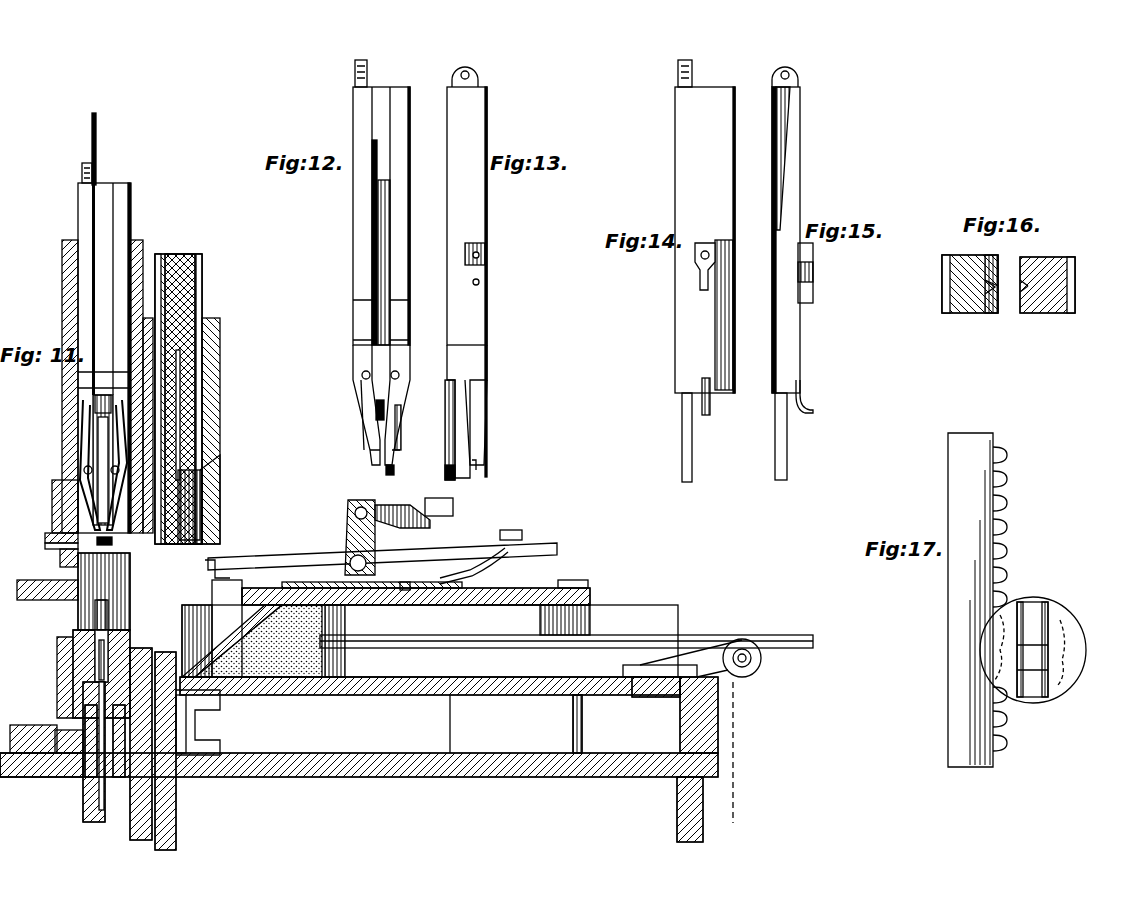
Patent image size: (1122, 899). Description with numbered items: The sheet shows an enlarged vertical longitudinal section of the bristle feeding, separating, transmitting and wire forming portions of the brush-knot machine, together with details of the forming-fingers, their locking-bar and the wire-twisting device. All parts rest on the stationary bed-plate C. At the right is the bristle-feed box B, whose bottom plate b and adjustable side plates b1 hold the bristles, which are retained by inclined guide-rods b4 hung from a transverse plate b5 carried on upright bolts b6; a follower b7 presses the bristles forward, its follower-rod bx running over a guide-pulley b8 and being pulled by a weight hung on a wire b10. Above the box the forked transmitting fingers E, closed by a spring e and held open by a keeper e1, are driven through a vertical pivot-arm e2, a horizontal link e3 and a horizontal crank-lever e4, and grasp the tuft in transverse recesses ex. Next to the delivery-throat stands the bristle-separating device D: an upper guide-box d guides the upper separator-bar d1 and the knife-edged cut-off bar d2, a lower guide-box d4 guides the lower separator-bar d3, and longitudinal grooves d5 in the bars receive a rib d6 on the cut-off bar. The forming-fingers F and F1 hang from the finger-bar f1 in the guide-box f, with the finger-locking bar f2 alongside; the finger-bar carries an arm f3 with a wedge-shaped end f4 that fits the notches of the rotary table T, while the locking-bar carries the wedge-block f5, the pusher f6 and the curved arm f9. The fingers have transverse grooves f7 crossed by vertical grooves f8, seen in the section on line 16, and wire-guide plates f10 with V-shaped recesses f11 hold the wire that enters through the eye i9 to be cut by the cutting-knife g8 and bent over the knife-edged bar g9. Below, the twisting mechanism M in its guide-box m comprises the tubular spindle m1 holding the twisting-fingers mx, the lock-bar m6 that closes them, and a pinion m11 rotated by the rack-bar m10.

In FIG. 11, the guide-box f is at (62, 272).
In FIG. 11, the finger-bar f1 is at (85, 217).
In FIG. 12, the finger-bar f1 is at (353, 230).
In FIG. 13, the finger-bar f1 is at (475, 225).
In FIG. 14, the finger-locking bar f2 is at (680, 198).
In FIG. 15, the finger-locking bar f2 is at (790, 178).
In FIG. 12, the downwardly-extending arm f3 is at (400, 428).
In FIG. 11, the wedge-shaped end f4 is at (112, 545).
In FIG. 12, the wedge-shaped end f4 is at (394, 470).
In FIG. 13, the wedge-shaped end f4 is at (455, 472).
In FIG. 11, the wedge-shaped block f5 is at (95, 398).
In FIG. 14, the wedge-shaped block f5 is at (695, 285).
In FIG. 15, the wedge-shaped block f5 is at (813, 288).
In FIG. 14, the stem or pusher f6 is at (682, 445).
In FIG. 15, the stem or pusher f6 is at (790, 455).
In FIG. 16, the transverse grooves f7 is at (990, 255).
In FIG. 16, the vertical grooves f8 is at (985, 287).
In FIG. 14, the curved arm f9 is at (710, 410).
In FIG. 15, the curved arm f9 is at (814, 405).
In FIG. 11, the wire-guide plate f10 is at (78, 374).
In FIG. 12, the wire-guide plate f10 is at (355, 360).
In FIG. 13, the wire-guide plate f10 is at (480, 355).
In FIG. 16, the wire-guide plate f10 is at (944, 298).
In FIG. 13, the V-shaped recesses f11 is at (482, 455).
In FIG. 11, the forming-finger F is at (110, 505).
In FIG. 12, the forming-finger F is at (398, 406).
In FIG. 16, the forming-finger F is at (1055, 305).
In FIG. 11, the forming-finger F1 is at (90, 488).
In FIG. 12, the forming-finger F1 is at (360, 415).
In FIG. 13, the forming-finger F1 is at (487, 425).
In FIG. 16, the forming-finger F1 is at (968, 300).
In FIG. 12, the section line 16 is at (370, 448).
In FIG. 11, the upper guide-box d is at (220, 403).
In FIG. 11, the upper separator-bar d1 is at (175, 254).
In FIG. 11, the bristle-cut-off bar d2 is at (188, 300).
In FIG. 11, the lower separator-bar d3 is at (166, 650).
In FIG. 11, the lower guide-box d4 is at (160, 632).
In FIG. 11, the longitudinal grooves d5 is at (180, 372).
In FIG. 11, the longitudinal rib d6 is at (190, 500).
In FIG. 11, the bristle-separating device D is at (168, 520).
In FIG. 11, the eye i9 is at (45, 546).
In FIG. 11, the cutting-knife g8 is at (62, 560).
In FIG. 11, the knife-edged bar g9 is at (104, 617).
In FIG. 11, the rotary table T is at (50, 600).
In FIG. 11, the wire grasping and twisting mechanism M is at (57, 663).
In FIG. 11, the guide-box m is at (55, 690).
In FIG. 11, the twisting-fingers mx is at (96, 614).
In FIG. 17, the twisting-fingers mx is at (1030, 615).
In FIG. 11, the tubular spindle m1 is at (83, 812).
In FIG. 17, the tubular spindle m1 is at (1075, 685).
In FIG. 11, the lock-bar m6 is at (100, 835).
In FIG. 11, the rack-bar m10 is at (40, 775).
In FIG. 17, the rack-bar m10 is at (958, 497).
In FIG. 11, the pinion m11 is at (85, 725).
In FIG. 17, the pinion m11 is at (1052, 610).
In FIG. 11, the bristle-feed box B is at (360, 665).
In FIG. 11, the bed-plate C is at (359, 784).
In FIG. 11, the bottom plate b is at (440, 697).
In FIG. 11, the side plates b1 is at (228, 590).
In FIG. 11, the guide-rods b4 is at (560, 607).
In FIG. 11, the transverse plate b5 is at (490, 590).
In FIG. 11, the upright bolts b6 is at (582, 718).
In FIG. 11, the follower b7 is at (318, 648).
In FIG. 11, the guide-pulley b8 is at (745, 680).
In FIG. 11, the wire b10 is at (733, 780).
In FIG. 11, the follower-rod bx is at (515, 640).
In FIG. 11, the bristle-transmitting fingers E is at (258, 585).
In FIG. 11, the spring e is at (474, 566).
In FIG. 11, the keeper e1 is at (528, 522).
In FIG. 11, the vertical pivot-arm e2 is at (348, 520).
In FIG. 11, the horizontal link e3 is at (385, 504).
In FIG. 11, the horizontal crank-lever e4 is at (453, 507).
In FIG. 11, the transverse recesses ex is at (225, 565).